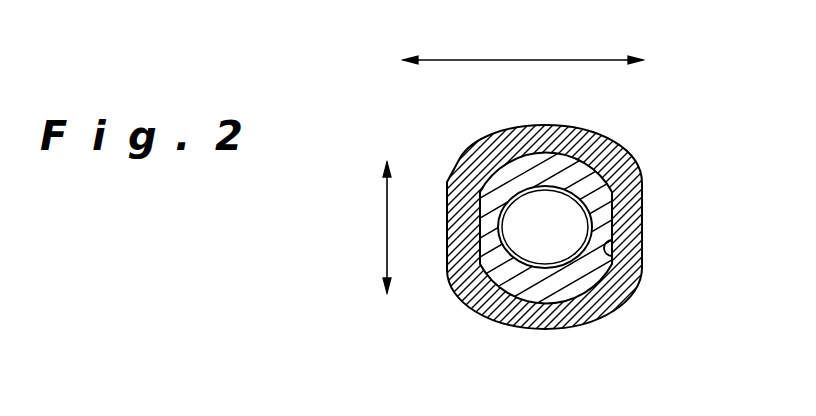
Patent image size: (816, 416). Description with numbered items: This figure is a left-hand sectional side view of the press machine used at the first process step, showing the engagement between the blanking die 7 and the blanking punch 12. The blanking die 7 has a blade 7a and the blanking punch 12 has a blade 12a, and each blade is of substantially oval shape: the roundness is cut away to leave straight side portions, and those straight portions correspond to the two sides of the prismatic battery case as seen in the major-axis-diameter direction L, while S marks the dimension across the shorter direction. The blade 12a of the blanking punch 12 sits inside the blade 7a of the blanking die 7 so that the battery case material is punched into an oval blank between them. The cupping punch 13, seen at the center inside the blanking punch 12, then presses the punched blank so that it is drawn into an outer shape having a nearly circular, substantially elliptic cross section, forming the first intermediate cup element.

The blanking die 7 is at (636, 192).
The blade of blanking die 7a is at (635, 249).
The blanking punch 12 is at (554, 172).
The blade of blanking punch 12a is at (613, 212).
The cupping punch 13 is at (528, 225).
The major-axis-diameter direction L is at (523, 58).
The width dimension S is at (387, 215).